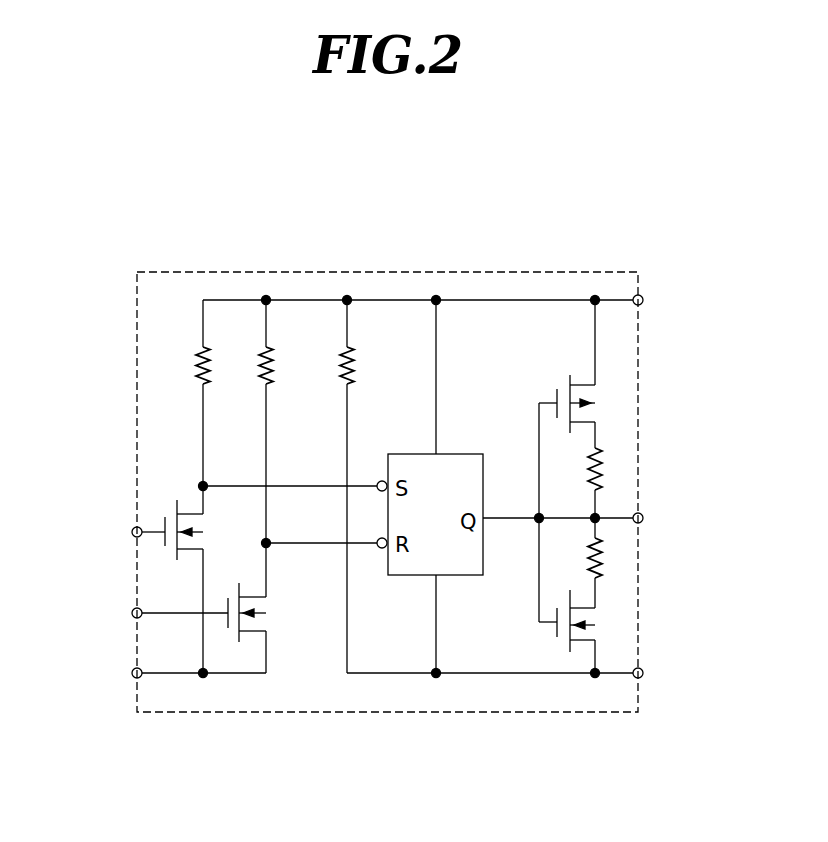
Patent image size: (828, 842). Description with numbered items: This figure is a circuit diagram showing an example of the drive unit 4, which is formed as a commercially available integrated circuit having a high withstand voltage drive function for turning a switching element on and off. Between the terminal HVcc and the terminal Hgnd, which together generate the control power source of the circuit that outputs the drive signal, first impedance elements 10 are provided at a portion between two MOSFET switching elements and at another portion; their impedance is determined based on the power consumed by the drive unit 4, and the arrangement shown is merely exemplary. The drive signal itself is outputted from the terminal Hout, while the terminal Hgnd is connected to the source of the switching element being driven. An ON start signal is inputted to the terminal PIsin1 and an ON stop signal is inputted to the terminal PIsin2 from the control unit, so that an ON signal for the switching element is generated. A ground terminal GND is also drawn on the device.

The drive unit 4 is at (569, 271).
The first impedance elements 10 is at (355, 362).
The terminal HVcc is at (666, 301).
The terminal Hout is at (646, 518).
The terminal Hgnd is at (666, 673).
The terminal Plsin1 PIsin1 is at (108, 532).
The terminal Plsin2 PIsin2 is at (140, 613).
The ground terminal GND is at (168, 673).